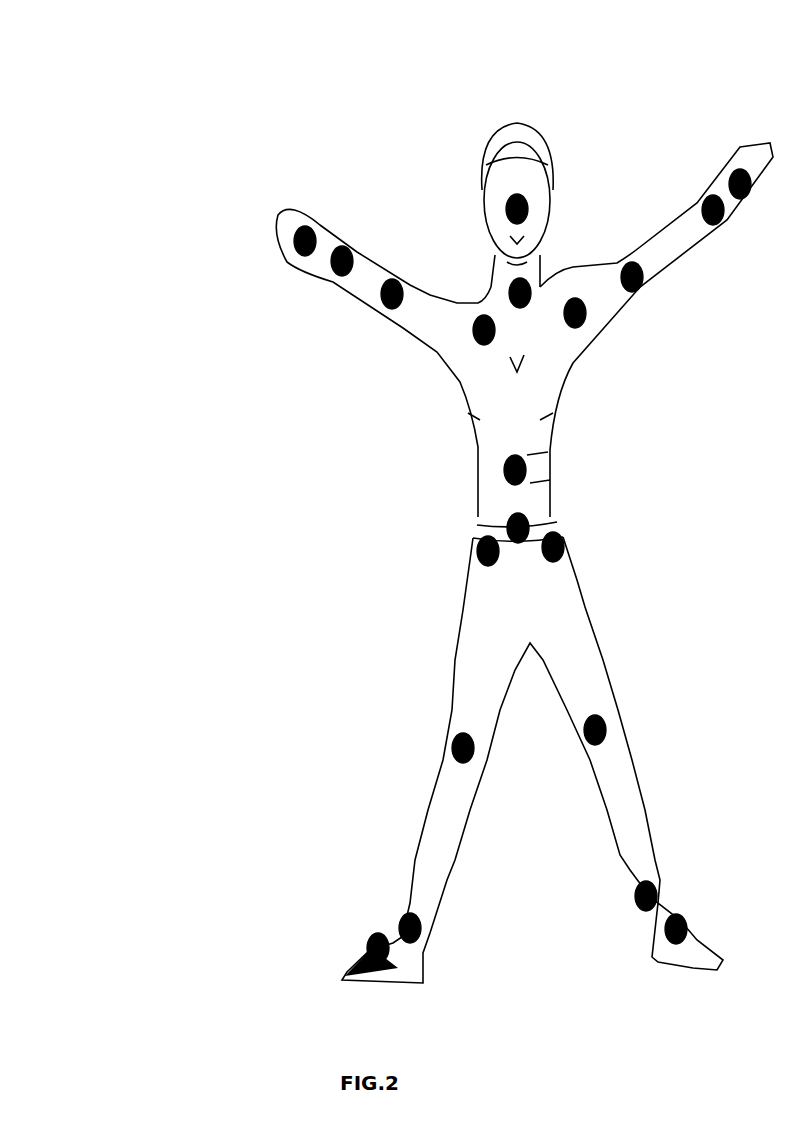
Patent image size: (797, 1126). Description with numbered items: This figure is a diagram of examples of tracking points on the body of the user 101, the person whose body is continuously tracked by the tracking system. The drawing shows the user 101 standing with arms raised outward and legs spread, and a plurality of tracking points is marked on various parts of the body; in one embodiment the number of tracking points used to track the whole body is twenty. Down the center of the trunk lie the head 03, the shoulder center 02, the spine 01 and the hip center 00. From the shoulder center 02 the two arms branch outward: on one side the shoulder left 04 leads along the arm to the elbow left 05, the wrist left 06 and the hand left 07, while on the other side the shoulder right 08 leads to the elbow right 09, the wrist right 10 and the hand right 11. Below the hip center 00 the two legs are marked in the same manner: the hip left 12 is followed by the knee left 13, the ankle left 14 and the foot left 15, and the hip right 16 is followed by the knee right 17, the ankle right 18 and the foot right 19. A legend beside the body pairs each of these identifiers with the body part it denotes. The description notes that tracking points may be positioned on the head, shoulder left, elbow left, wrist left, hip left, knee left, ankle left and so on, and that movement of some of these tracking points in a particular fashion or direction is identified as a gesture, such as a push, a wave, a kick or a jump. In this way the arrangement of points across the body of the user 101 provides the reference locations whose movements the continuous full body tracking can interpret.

The user 101 is at (590, 113).
The hip center joint 00 is at (518, 528).
The spine joint 01 is at (515, 470).
The shoulder center joint 02 is at (520, 293).
The head joint 03 is at (517, 209).
The shoulder left joint 04 is at (575, 313).
The elbow left joint 05 is at (632, 277).
The wrist left joint 06 is at (713, 210).
The hand left joint 07 is at (740, 184).
The shoulder right joint 08 is at (484, 330).
The elbow right joint 09 is at (392, 294).
The wrist right joint 10 is at (342, 261).
The hand right joint 11 is at (305, 241).
The hip left joint 12 is at (553, 547).
The knee left joint 13 is at (595, 730).
The ankle left joint 14 is at (646, 896).
The foot left joint 15 is at (676, 929).
The hip right joint 16 is at (488, 551).
The knee right joint 17 is at (463, 748).
The ankle right joint 18 is at (410, 928).
The foot right joint 19 is at (378, 948).